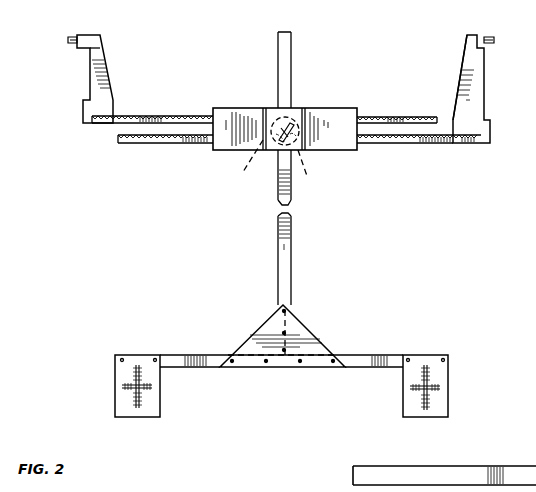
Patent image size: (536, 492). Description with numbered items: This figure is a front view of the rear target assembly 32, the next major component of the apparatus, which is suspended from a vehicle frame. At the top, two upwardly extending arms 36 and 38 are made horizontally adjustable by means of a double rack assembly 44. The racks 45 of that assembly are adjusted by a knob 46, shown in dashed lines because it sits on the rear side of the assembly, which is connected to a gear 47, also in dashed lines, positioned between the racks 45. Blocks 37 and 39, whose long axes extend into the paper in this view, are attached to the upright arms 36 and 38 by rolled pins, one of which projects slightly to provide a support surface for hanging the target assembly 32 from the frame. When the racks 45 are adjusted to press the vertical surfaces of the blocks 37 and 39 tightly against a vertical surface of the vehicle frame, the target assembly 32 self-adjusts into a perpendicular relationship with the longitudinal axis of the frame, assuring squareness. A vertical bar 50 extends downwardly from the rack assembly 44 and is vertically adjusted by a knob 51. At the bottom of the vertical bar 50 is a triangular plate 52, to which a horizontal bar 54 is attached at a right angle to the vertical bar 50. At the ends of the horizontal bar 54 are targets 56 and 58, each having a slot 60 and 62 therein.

The rear target assembly 32 is at (331, 85).
The upwardly extending arm 36 is at (82, 126).
The block 37 is at (76, 41).
The upwardly extending arm 38 is at (468, 123).
The block 39 is at (490, 48).
The double rack assembly 44 is at (352, 152).
The racks 45 is at (163, 112).
The knob 46 is at (239, 163).
The gear 47 is at (314, 168).
The vertical bar 50 is at (291, 267).
The knob 51 is at (283, 121).
The triangular plate 52 is at (312, 332).
The horizontal bar 54 is at (362, 360).
The target 56 is at (161, 415).
The target 58 is at (448, 417).
The slot 60 is at (140, 378).
The slot 62 is at (428, 380).